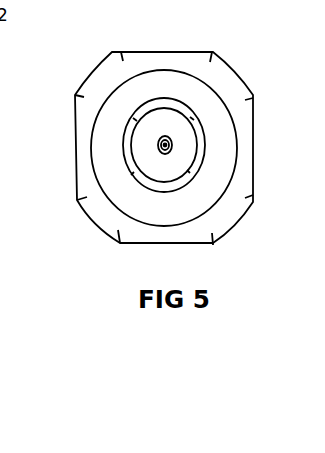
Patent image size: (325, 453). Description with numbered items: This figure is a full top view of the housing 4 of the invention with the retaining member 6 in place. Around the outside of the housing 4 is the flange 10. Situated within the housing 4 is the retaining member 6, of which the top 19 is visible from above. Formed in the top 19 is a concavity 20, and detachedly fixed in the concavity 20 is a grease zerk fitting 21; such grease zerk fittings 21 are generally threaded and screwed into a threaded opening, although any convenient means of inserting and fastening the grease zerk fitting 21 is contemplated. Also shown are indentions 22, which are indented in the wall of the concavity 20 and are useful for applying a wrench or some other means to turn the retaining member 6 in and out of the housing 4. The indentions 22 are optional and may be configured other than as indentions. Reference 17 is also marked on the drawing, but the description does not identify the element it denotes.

The housing 4 is at (252, 57).
The retaining member 6 is at (225, 140).
The flange 10 is at (228, 208).
The wall 17 is at (315, 102).
The top 19 is at (155, 82).
The concavity 20 is at (193, 151).
The grease zerk fitting 21 is at (172, 150).
The indentions 22 is at (137, 120).